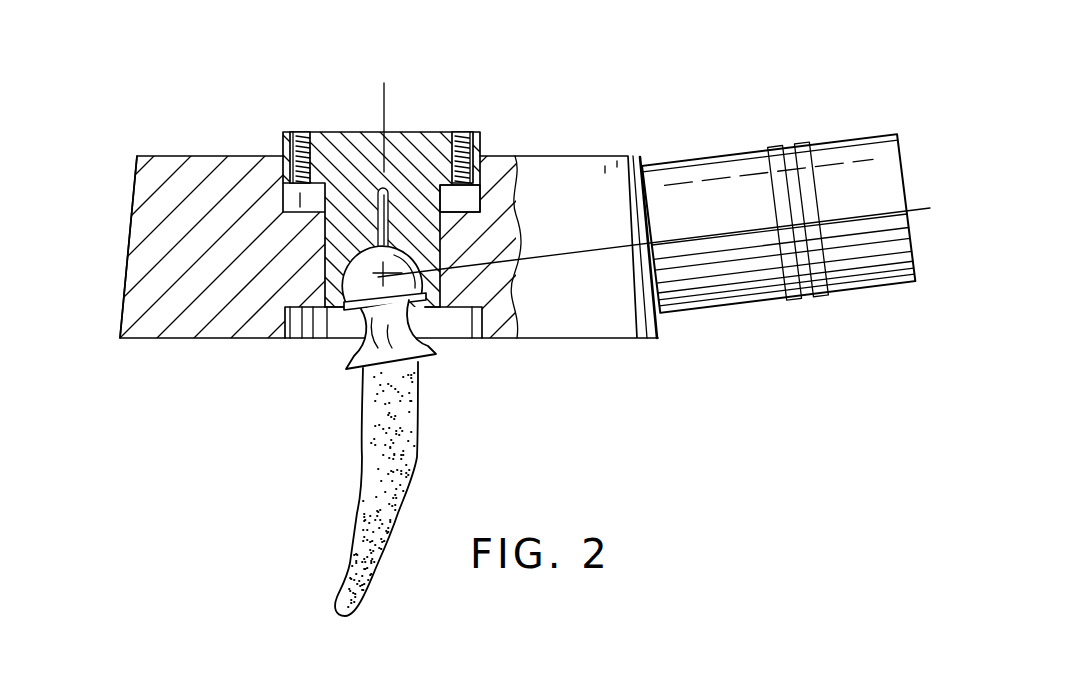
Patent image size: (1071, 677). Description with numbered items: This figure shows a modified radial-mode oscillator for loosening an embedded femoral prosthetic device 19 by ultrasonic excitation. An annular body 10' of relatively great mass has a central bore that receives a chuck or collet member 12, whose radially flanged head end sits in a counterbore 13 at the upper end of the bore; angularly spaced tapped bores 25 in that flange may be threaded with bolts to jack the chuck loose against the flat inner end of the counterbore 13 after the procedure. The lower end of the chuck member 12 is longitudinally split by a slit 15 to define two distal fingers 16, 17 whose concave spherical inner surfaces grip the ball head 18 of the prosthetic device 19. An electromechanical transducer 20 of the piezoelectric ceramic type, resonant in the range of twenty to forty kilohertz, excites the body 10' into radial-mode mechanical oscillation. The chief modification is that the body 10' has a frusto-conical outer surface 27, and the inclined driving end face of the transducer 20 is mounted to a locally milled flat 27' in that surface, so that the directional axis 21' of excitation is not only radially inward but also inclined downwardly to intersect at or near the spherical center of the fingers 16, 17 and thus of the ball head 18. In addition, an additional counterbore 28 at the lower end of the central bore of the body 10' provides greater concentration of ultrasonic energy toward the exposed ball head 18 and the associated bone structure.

The annular body 10' is at (370, 224).
The chuck or collet member 12 is at (436, 128).
The counterbore 13 is at (466, 197).
The slit 15 is at (390, 190).
The finger 16 is at (345, 302).
The finger 17 is at (428, 300).
The ball head 18 is at (345, 304).
The prosthetic device 19 is at (419, 460).
The electromechanical transducer 20 is at (763, 312).
The directional axis 21' is at (779, 219).
The tapped bores 25 is at (300, 132).
The outer surface 27 is at (100, 247).
The milled flat 27' is at (662, 247).
The additional counterbore 28 is at (465, 325).